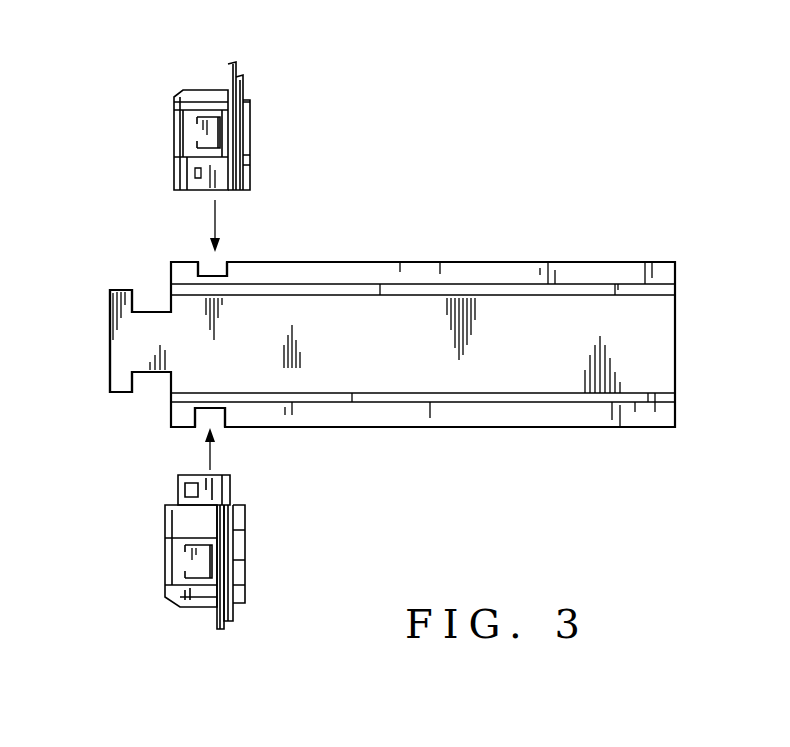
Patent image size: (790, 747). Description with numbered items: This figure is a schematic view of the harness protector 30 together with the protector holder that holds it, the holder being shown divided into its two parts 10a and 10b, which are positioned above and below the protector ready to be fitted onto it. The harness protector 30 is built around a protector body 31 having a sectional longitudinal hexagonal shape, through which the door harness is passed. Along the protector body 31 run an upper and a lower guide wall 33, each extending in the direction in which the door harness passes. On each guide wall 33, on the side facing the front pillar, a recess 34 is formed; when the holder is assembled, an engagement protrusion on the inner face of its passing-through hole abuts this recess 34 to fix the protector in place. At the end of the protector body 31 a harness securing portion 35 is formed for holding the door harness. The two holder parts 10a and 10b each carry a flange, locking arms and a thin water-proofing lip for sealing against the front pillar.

The protector holder part 10a is at (260, 95).
The protector holder part 10b is at (255, 585).
The harness protector 30 is at (405, 323).
The protector body 31 is at (676, 316).
The guide wall 33 is at (425, 278).
The recess 34 is at (221, 262).
The harness securing portion 35 is at (111, 299).